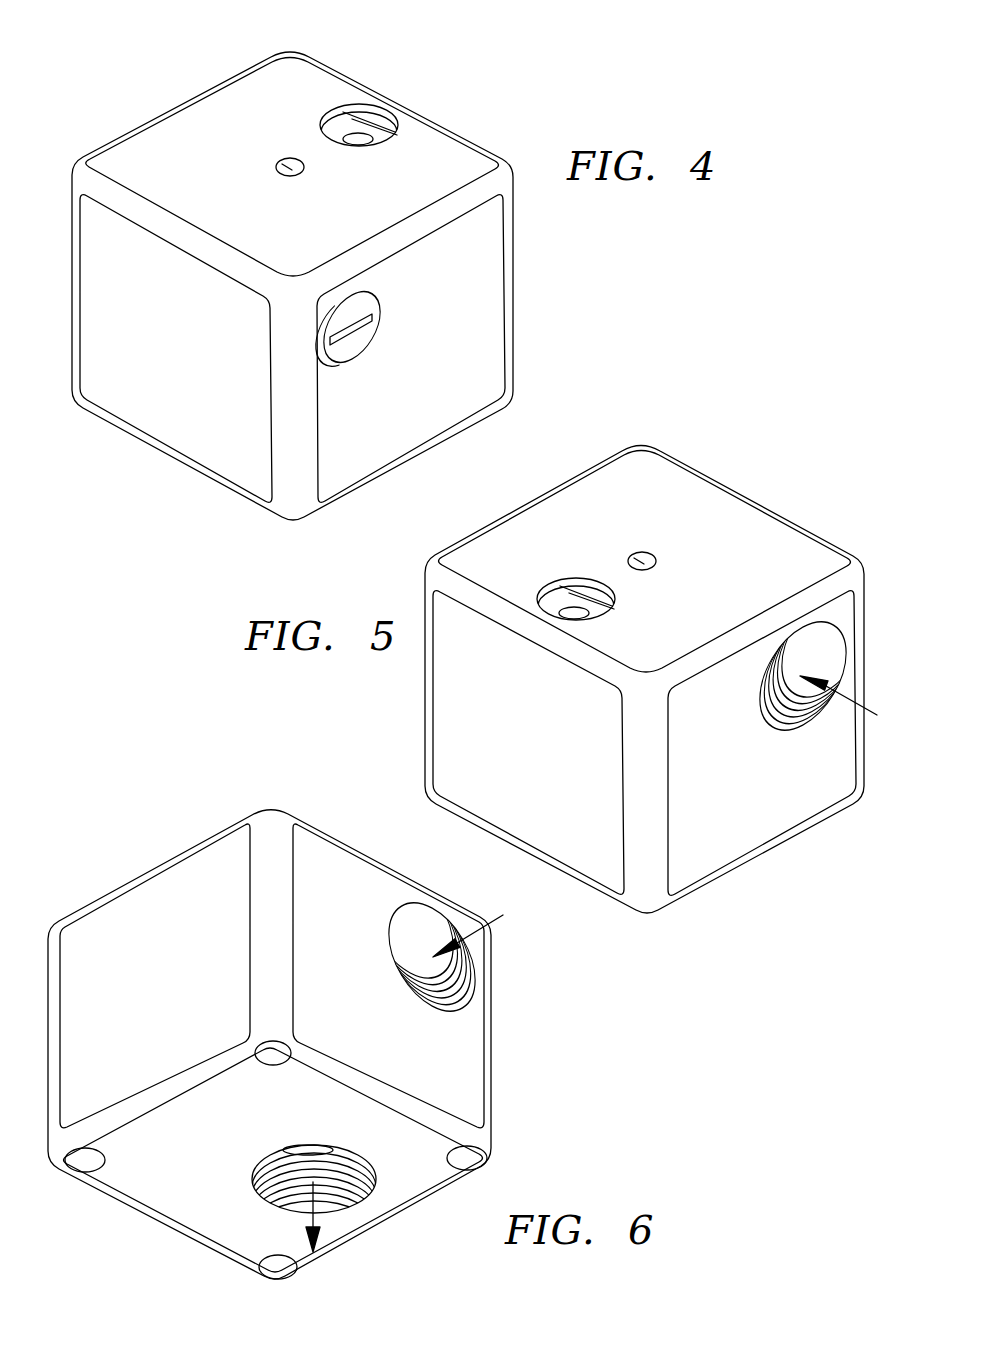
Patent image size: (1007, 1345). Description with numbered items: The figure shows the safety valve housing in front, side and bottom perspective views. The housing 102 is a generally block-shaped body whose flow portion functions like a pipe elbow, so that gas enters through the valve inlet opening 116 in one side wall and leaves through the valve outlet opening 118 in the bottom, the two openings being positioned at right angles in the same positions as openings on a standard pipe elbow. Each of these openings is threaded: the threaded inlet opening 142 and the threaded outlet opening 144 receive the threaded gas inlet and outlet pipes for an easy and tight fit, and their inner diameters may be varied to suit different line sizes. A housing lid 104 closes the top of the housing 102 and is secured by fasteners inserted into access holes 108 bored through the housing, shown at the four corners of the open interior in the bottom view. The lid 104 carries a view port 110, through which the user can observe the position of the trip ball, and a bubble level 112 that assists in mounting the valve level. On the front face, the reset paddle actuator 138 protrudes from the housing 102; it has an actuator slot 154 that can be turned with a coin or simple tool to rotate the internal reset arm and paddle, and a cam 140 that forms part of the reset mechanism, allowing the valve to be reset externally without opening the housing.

In FIG. 4, the valve housing 102 is at (480, 288).
In FIG. 5, the valve housing 102 is at (843, 606).
In FIG. 6, the valve housing 102 is at (269, 1044).
In FIG. 4, the housing lid 104 is at (242, 95).
In FIG. 5, the housing lid 104 is at (667, 468).
In FIG. 6, the access holes 108 is at (268, 1051).
In FIG. 4, the view port 110 is at (377, 117).
In FIG. 5, the view port 110 is at (572, 595).
In FIG. 4, the bubble level 112 is at (280, 163).
In FIG. 5, the bubble level 112 is at (640, 559).
In FIG. 5, the valve inlet opening 116 is at (787, 683).
In FIG. 6, the valve inlet opening 116 is at (402, 953).
In FIG. 6, the valve outlet opening 118 is at (262, 1167).
In FIG. 4, the reset paddle actuator 138 is at (342, 310).
In FIG. 4, the cam 140 is at (340, 372).
In FIG. 6, the threaded inlet opening 142 is at (428, 945).
In FIG. 6, the threaded outlet opening 144 is at (340, 1187).
In FIG. 4, the actuator slot 154 is at (373, 330).